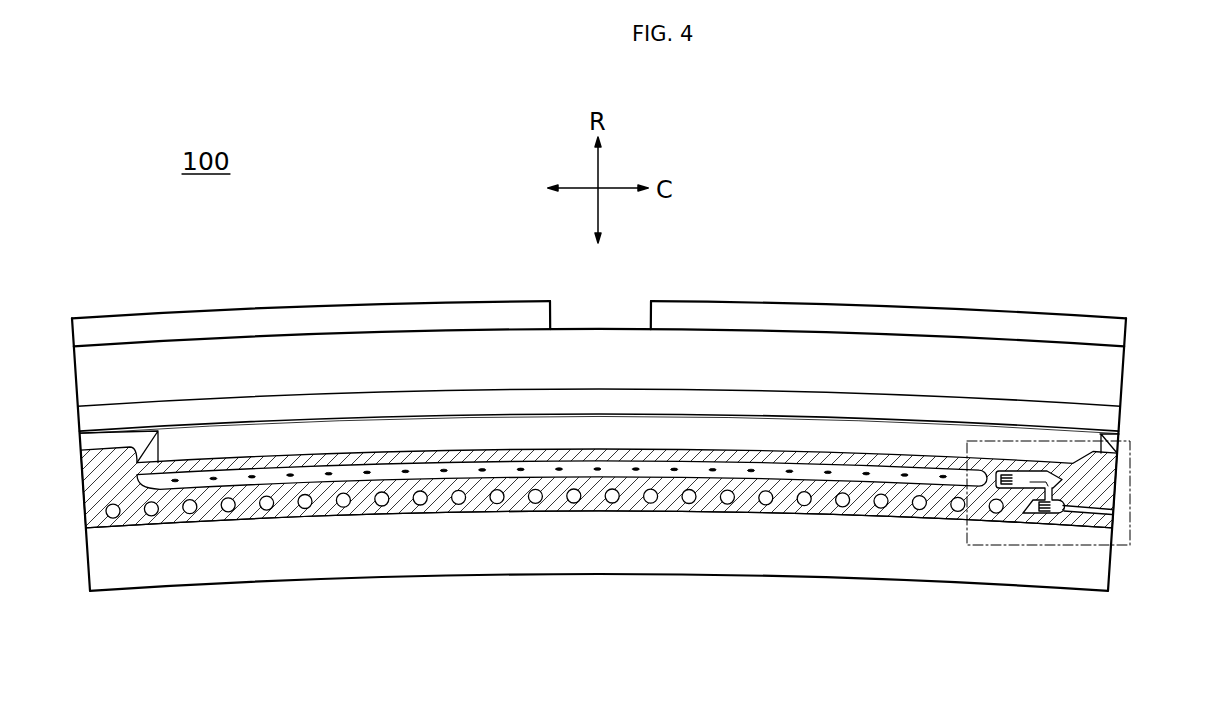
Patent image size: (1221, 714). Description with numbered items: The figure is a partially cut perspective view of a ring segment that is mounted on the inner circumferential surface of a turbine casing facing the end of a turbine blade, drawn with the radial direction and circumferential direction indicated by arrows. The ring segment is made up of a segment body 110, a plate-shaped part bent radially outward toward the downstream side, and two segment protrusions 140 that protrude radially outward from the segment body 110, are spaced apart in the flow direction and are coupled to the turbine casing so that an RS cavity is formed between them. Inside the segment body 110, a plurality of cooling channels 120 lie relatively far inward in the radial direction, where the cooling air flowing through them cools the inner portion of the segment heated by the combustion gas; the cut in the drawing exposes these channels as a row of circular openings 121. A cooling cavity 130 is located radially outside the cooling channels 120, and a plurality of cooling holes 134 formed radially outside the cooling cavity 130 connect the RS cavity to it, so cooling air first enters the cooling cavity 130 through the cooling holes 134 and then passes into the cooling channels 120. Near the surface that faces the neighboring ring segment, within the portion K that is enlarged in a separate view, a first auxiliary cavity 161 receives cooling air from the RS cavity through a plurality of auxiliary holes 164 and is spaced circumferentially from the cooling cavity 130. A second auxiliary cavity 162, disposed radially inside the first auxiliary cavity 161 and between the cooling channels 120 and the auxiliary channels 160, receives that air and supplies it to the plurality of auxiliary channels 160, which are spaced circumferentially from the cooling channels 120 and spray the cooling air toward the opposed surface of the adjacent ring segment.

The segment body 110 is at (347, 565).
The cooling channels 120 is at (412, 512).
The cooling holes 121 is at (267, 506).
The cooling cavity 130 is at (836, 468).
The cooling holes 134 is at (450, 470).
The segment protrusions 140 is at (1118, 362).
The auxiliary channels 160 is at (1085, 528).
The first auxiliary cavity 161 is at (1036, 481).
The second auxiliary cavity 162 is at (1038, 512).
The auxiliary holes 164 is at (1002, 475).
The portion K is at (1131, 537).